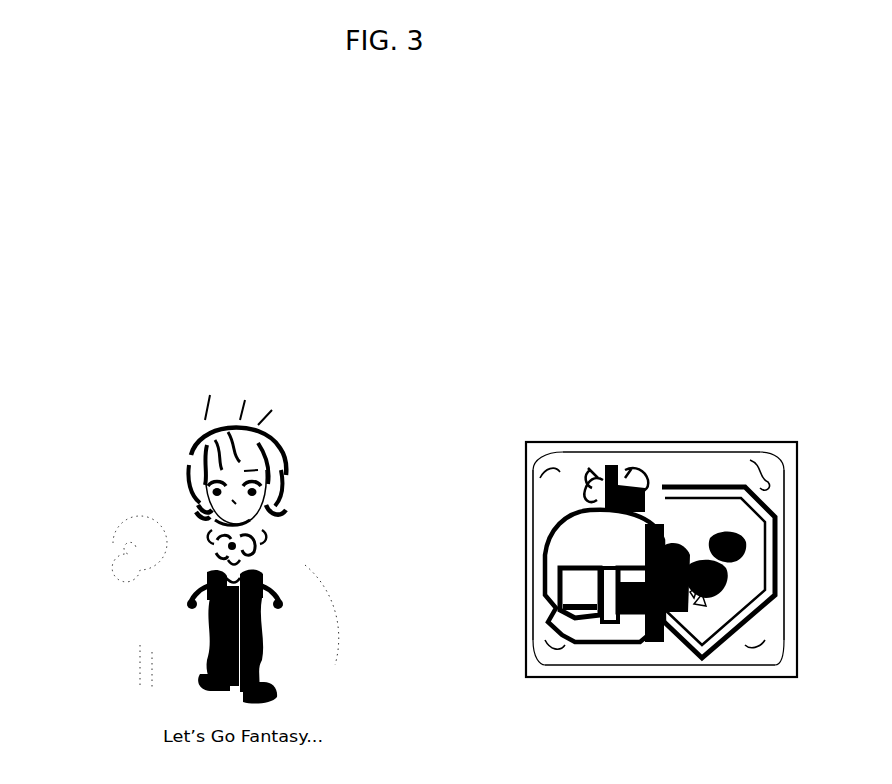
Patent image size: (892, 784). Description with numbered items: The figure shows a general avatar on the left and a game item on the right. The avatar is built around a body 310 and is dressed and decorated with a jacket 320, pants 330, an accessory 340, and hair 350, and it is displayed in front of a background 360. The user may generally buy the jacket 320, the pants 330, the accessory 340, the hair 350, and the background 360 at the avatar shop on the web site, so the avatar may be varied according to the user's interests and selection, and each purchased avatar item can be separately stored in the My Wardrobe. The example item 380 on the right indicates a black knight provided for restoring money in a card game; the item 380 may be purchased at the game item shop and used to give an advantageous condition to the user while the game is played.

The body 310 is at (259, 447).
The jacket 320 is at (280, 540).
The pants 330 is at (267, 673).
The accessory 340 is at (287, 505).
The hair 350 is at (209, 430).
The background 360 is at (100, 465).
The item 380 is at (592, 440).